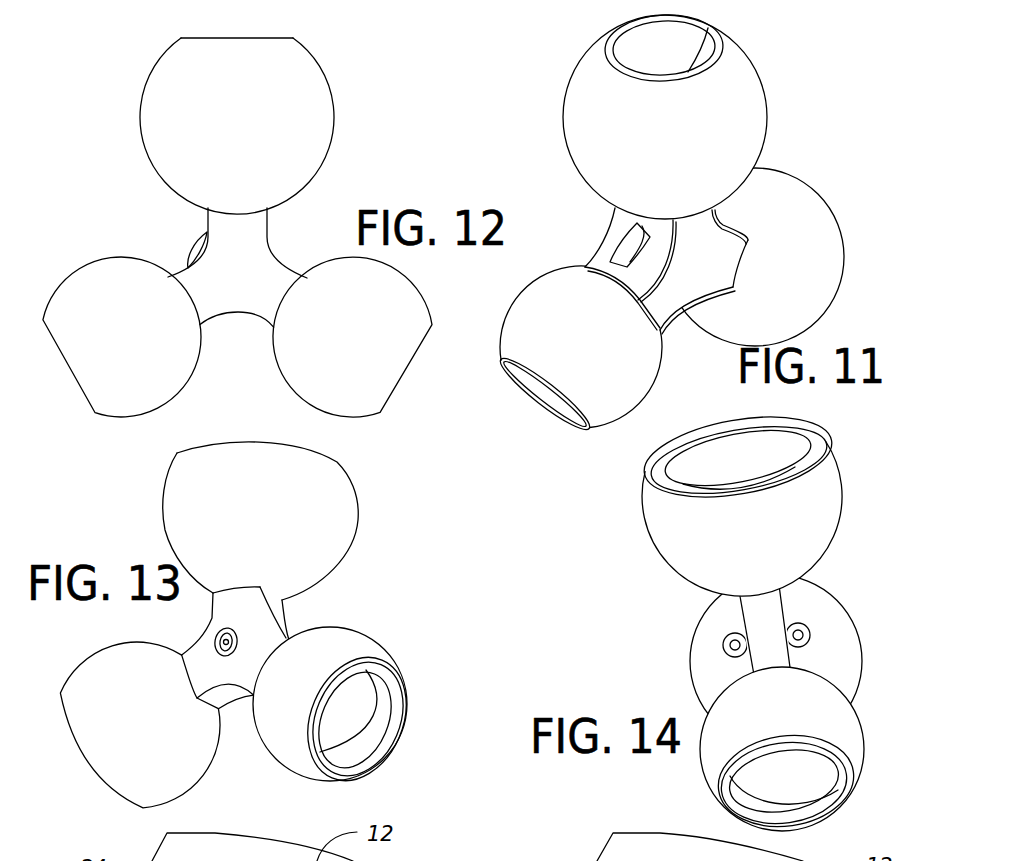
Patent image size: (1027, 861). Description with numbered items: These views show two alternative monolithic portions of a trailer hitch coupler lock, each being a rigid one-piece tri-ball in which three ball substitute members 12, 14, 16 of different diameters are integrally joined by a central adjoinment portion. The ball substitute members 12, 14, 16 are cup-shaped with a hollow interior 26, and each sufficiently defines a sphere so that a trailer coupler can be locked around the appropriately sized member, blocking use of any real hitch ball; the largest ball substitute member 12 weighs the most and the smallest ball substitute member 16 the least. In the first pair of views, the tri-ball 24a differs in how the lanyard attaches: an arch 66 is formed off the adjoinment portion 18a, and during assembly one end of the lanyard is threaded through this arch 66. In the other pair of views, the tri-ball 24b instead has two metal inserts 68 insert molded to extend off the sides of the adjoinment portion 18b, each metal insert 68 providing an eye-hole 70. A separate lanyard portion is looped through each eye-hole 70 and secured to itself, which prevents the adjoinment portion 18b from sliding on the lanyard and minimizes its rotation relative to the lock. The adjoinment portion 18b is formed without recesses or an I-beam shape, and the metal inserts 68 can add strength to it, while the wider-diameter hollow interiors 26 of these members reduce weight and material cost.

In FIG. 12, the ball substitute member 12 is at (296, 101).
In FIG. 11, the ball substitute member 12 is at (735, 80).
In FIG. 13, the ball substitute member 12 is at (310, 497).
In FIG. 14, the ball substitute member 12 is at (828, 467).
In FIG. 12, the ball substitute member 14 is at (185, 368).
In FIG. 11, the ball substitute member 14 is at (645, 351).
In FIG. 13, the ball substitute member 14 is at (200, 763).
In FIG. 14, the ball substitute member 14 is at (840, 618).
In FIG. 12, the ball substitute member 16 is at (392, 277).
In FIG. 11, the ball substitute member 16 is at (828, 255).
In FIG. 13, the ball substitute member 16 is at (355, 637).
In FIG. 14, the ball substitute member 16 is at (844, 723).
In FIG. 12, the adjoinment portion 18a is at (268, 263).
In FIG. 11, the adjoinment portion 18a is at (715, 272).
In FIG. 13, the adjoinment portion 18b is at (250, 653).
In FIG. 14, the adjoinment portion 18b is at (759, 614).
In FIG. 12, the tri-ball 24a is at (407, 182).
In FIG. 11, the tri-ball 24a is at (846, 160).
In FIG. 13, the tri-ball 24b is at (428, 577).
In FIG. 14, the tri-ball 24b is at (866, 554).
In FIG. 11, the hollow interior 26 is at (708, 28).
In FIG. 13, the hollow interior 26 is at (343, 697).
In FIG. 14, the hollow interior 26 is at (777, 452).
In FIG. 12, the arch 66 is at (200, 234).
In FIG. 11, the arch 66 is at (622, 252).
In FIG. 13, the metal insert 68 is at (215, 637).
In FIG. 14, the metal insert 68 is at (723, 645).
In FIG. 13, the eye-hole 70 is at (235, 635).
In FIG. 14, the eye-hole 70 is at (724, 652).